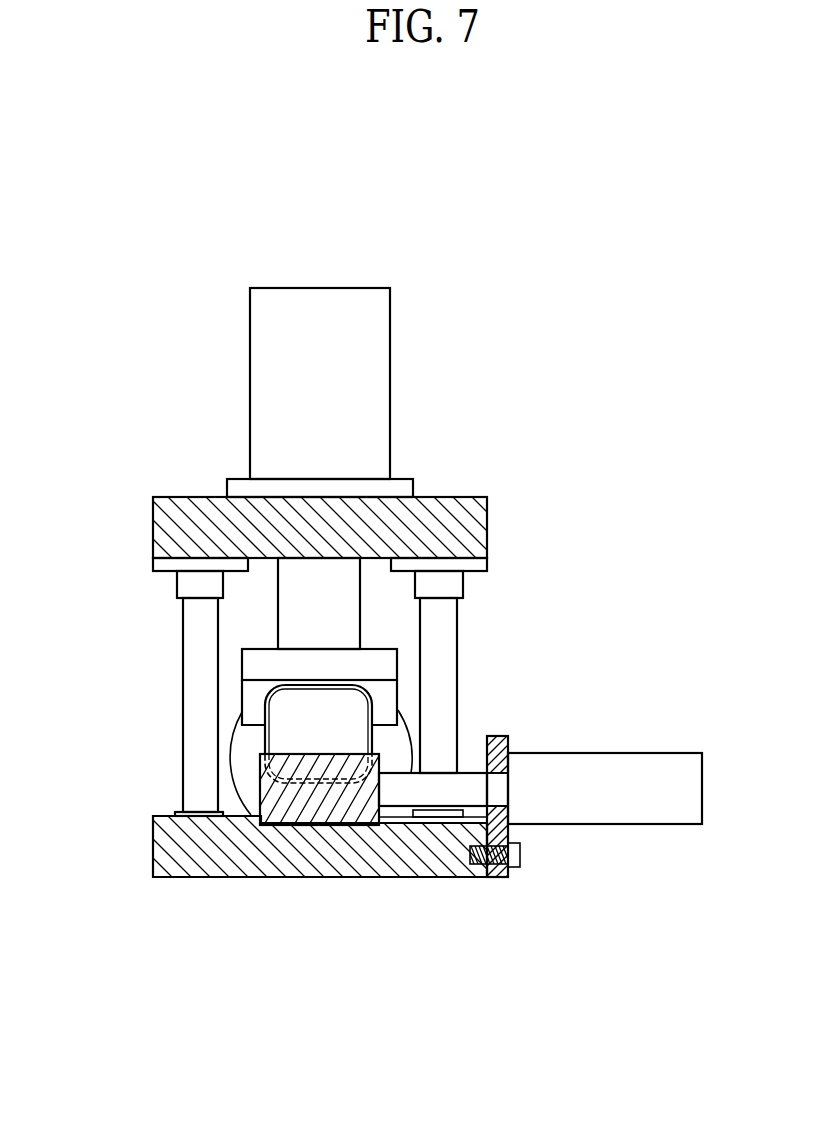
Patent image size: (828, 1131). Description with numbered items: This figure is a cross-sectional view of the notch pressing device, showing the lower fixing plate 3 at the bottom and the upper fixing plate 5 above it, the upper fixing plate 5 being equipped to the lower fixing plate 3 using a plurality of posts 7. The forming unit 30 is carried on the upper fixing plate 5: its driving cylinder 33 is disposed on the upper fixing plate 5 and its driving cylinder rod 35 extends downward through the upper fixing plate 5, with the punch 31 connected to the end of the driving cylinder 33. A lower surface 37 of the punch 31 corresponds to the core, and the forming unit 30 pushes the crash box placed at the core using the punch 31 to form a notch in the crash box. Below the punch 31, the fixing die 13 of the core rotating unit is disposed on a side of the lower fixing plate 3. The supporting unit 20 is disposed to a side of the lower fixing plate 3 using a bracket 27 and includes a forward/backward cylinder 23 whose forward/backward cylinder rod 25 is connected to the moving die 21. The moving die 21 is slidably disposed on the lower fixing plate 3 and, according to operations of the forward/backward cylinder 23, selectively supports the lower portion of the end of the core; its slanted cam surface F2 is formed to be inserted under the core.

The lower fixing plate 3 is at (175, 848).
The upper fixing plate 5 is at (465, 497).
The posts 7 is at (190, 622).
The fixing die 13 is at (240, 750).
The supporting unit 20 is at (524, 743).
The moving die 21 is at (322, 735).
The forward/backward cylinder 23 is at (663, 758).
The forward/backward cylinder rod 25 is at (470, 780).
The bracket 27 is at (502, 736).
The forming unit 30 is at (348, 504).
The punch 31 is at (243, 688).
The driving cylinder 33 is at (392, 313).
The driving cylinder rod 35 is at (327, 588).
The lower surface 37 is at (241, 716).
The cam surface F2 is at (302, 700).